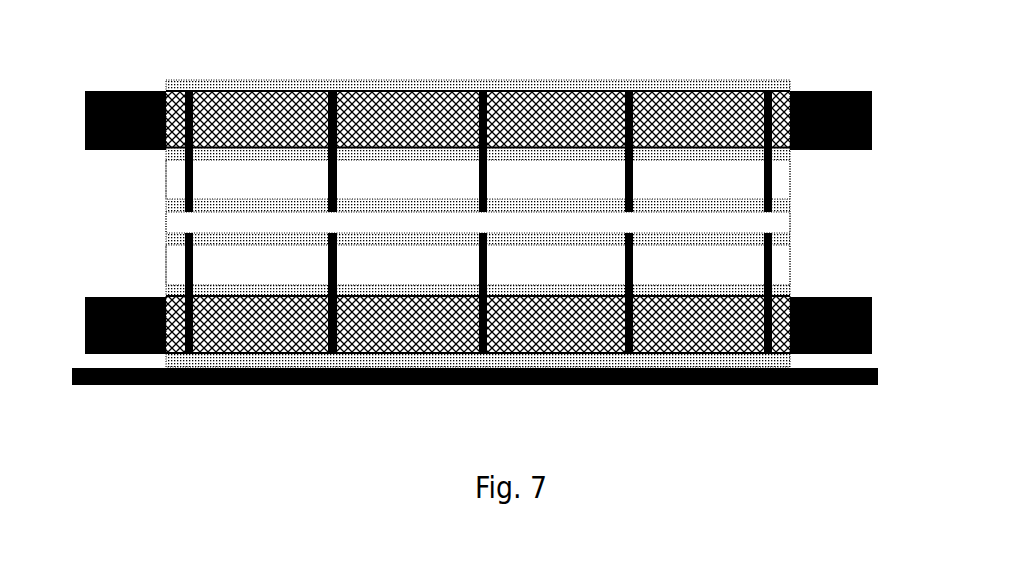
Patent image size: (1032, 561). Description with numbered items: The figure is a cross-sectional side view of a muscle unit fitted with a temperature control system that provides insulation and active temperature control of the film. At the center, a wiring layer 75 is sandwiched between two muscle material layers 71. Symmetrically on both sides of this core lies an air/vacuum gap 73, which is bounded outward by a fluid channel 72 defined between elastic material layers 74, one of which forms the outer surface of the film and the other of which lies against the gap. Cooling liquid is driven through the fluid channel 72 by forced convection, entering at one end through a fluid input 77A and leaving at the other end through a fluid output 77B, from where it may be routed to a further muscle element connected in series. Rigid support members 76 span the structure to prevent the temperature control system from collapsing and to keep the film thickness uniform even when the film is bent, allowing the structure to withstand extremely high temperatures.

The muscle material layer 71 is at (788, 205).
The fluid channel 72 is at (280, 107).
The air/vacuum gap 73 is at (433, 178).
The elastic material layer 74 is at (627, 87).
The wiring layer 75 is at (783, 227).
The rigid support member 76 is at (757, 103).
The fluid input 77A is at (108, 90).
The fluid output 77B is at (852, 90).